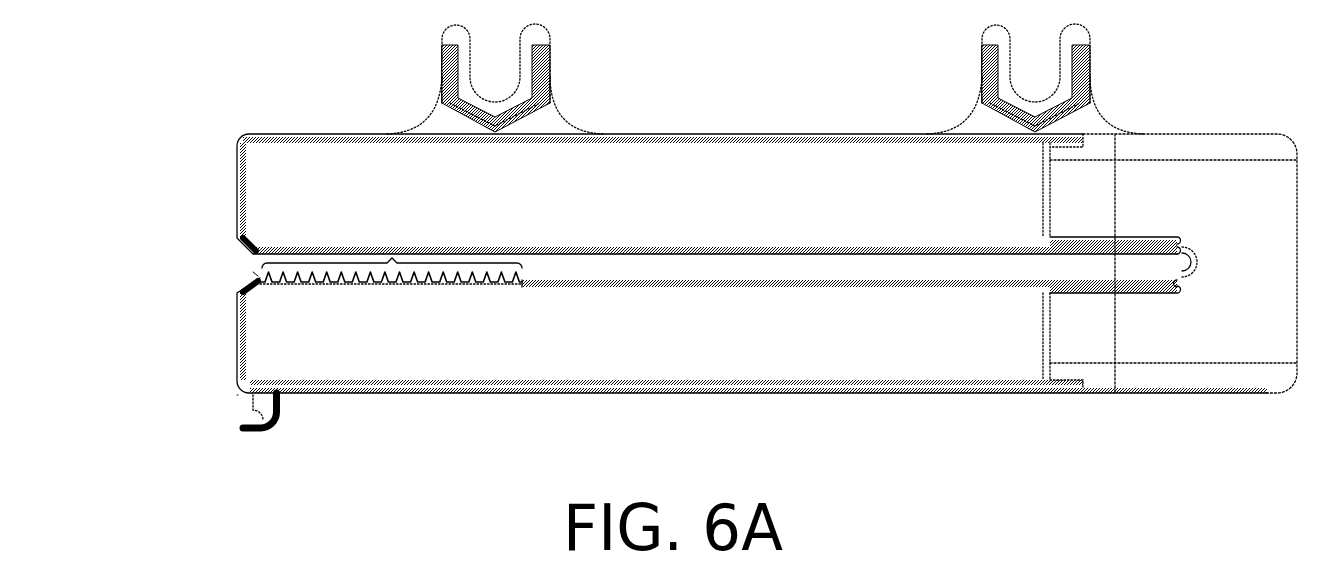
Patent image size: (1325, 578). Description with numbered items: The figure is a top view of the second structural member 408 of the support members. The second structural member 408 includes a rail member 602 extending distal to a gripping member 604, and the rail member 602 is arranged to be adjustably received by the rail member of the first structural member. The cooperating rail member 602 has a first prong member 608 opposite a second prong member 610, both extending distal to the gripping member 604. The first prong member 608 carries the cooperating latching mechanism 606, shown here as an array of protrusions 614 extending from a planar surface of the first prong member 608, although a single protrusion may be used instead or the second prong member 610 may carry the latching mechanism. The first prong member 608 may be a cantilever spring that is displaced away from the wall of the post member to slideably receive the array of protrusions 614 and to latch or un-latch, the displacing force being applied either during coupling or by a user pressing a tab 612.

The second structural member 408 is at (131, 60).
The rail member 602 is at (237, 395).
The gripping member 604 is at (1115, 395).
The cooperating latching mechanism 606 is at (242, 266).
The first prong member 608 is at (237, 340).
The second prong member 610 is at (237, 193).
The tab 612 is at (280, 420).
The array of protrusions 614 is at (390, 258).